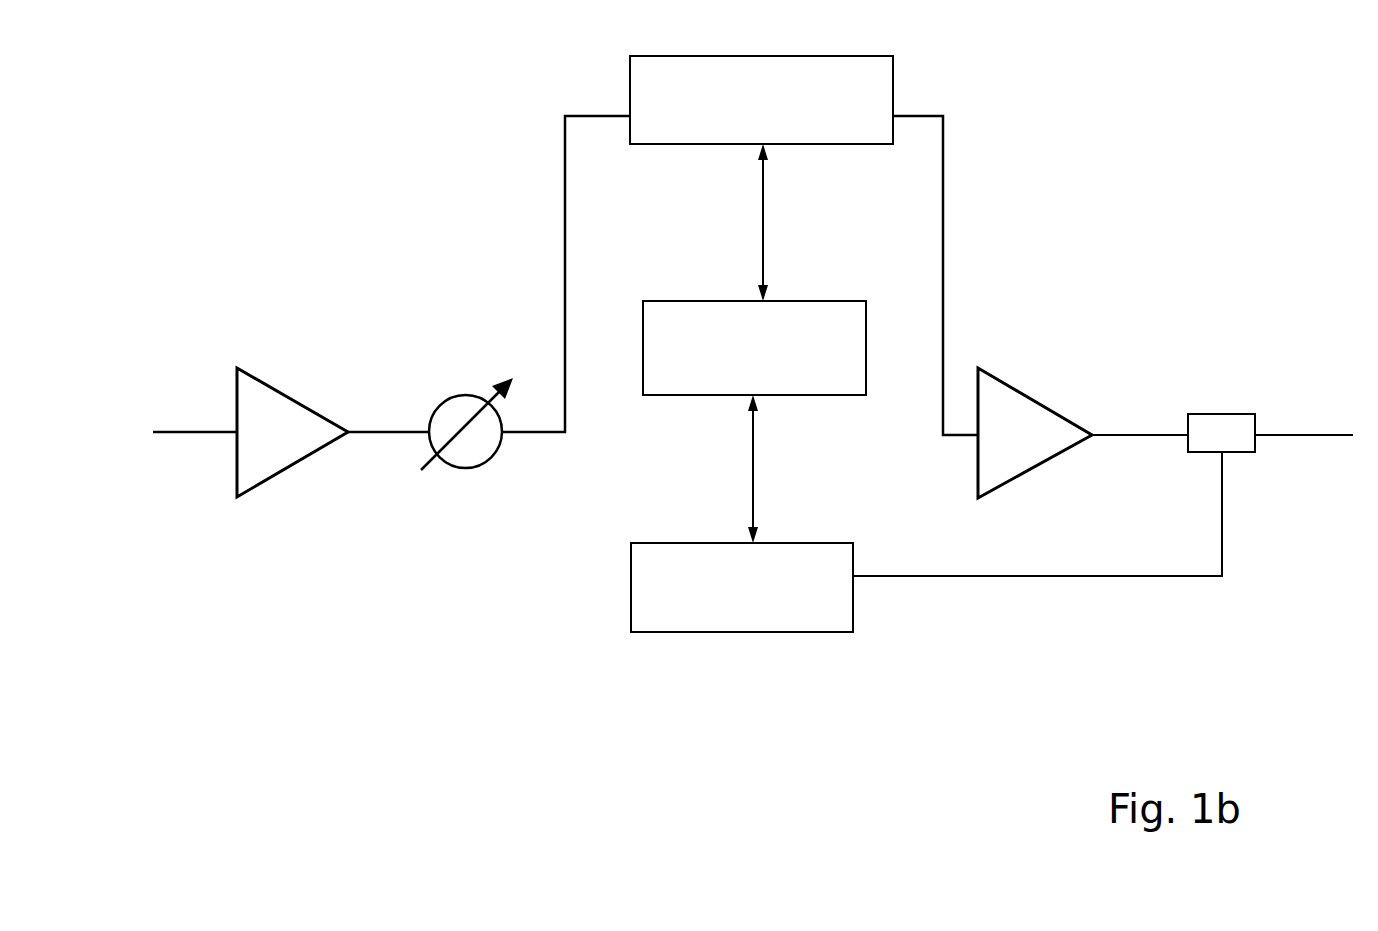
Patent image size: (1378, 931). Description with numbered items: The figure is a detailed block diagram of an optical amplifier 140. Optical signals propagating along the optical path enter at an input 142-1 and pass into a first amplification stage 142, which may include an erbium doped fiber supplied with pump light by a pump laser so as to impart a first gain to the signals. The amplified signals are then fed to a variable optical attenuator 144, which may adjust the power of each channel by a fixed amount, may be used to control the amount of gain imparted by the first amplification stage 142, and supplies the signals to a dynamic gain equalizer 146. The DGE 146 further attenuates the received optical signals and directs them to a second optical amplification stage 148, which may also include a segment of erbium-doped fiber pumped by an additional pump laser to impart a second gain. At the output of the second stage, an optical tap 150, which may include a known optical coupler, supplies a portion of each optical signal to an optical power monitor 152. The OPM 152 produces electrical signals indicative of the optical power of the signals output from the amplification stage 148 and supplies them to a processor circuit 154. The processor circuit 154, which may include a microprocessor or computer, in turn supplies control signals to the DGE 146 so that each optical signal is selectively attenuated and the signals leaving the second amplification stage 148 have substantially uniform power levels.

The optical amplifier 140 is at (307, 81).
The first amplification stage 142 is at (275, 475).
The input 142-1 is at (203, 432).
The variable optical attenuator 144 is at (435, 405).
The dynamic gain equalizer 146 is at (810, 144).
The second optical amplification stage 148 is at (1037, 402).
The optical tap 150 is at (1213, 414).
The optical power monitor 152 is at (697, 543).
The processor circuit 154 is at (697, 301).